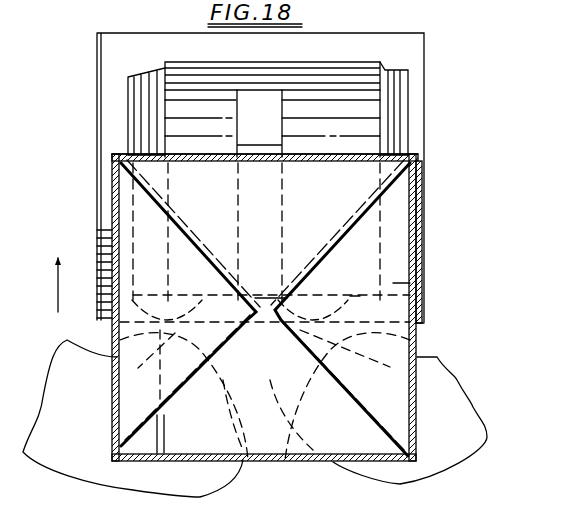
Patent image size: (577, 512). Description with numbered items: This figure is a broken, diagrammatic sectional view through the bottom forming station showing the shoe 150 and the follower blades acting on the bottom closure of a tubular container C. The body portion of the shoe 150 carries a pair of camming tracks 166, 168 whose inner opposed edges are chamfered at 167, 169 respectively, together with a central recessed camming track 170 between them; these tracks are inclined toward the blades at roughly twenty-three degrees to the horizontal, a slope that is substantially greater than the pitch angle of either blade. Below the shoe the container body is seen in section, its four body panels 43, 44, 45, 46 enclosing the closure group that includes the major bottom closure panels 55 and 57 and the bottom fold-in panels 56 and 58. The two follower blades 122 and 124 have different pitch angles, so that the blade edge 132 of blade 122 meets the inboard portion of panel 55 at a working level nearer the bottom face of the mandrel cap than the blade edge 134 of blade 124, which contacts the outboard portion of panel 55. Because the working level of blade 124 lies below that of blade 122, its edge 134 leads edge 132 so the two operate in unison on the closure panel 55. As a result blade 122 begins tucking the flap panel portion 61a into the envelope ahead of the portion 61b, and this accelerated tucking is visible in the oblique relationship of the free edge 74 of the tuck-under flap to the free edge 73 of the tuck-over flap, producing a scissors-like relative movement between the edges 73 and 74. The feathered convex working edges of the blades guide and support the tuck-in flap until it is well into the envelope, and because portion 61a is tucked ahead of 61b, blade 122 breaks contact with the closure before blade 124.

The shoe 150 is at (97, 84).
The chamfered edge 167 is at (148, 128).
The camming track 166 is at (112, 140).
The chamfered edge 169 is at (390, 120).
The camming track 168 is at (410, 140).
The central recessed camming track 170 is at (258, 160).
The body panel 45 is at (345, 157).
The body panel 44 is at (422, 268).
The body panel 46 is at (113, 408).
The body panel 43 is at (262, 462).
The bottom fold-in panel 58 is at (148, 222).
The major bottom closure panel 57 is at (360, 184).
The free edge of tuck-under flap 74 is at (253, 294).
The free edge of tuck-over flap 73 is at (355, 297).
The flap panel portion 61a is at (198, 284).
The flap panel portion 61b is at (420, 332).
The blade edge 132 is at (184, 396).
The blade edge 134 is at (347, 395).
The major bottom closure panel 55 is at (288, 447).
The bottom fold-in panel 56 is at (393, 283).
The blade 122 is at (113, 490).
The blade 124 is at (483, 465).
The container C is at (420, 342).